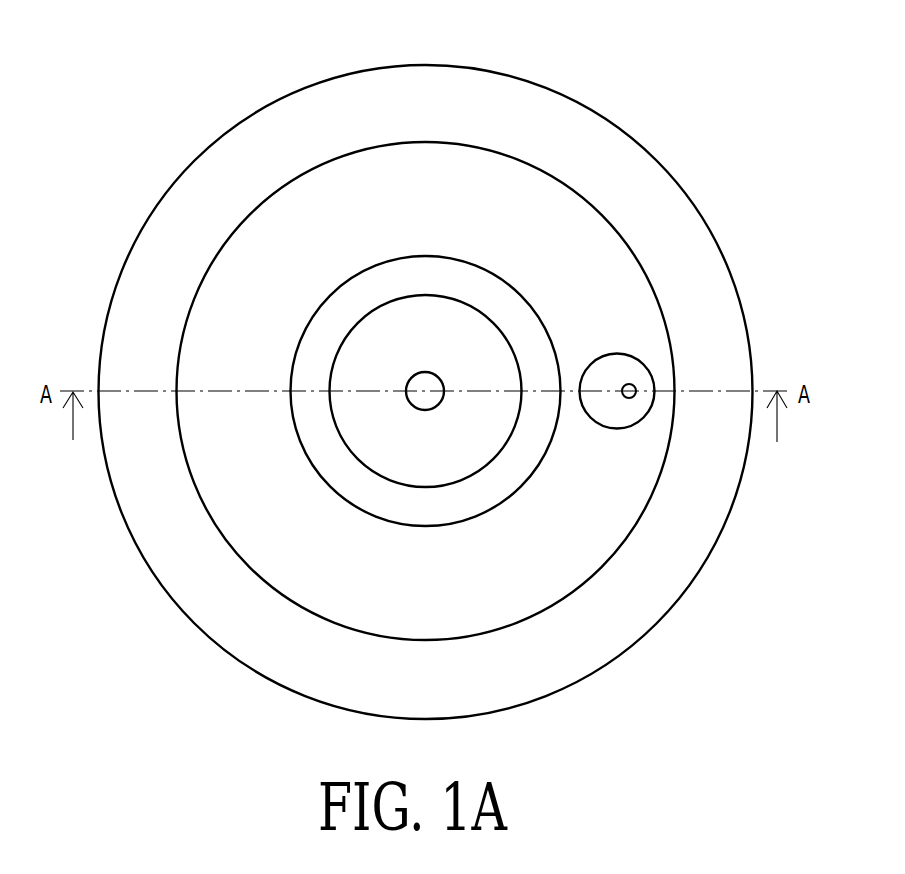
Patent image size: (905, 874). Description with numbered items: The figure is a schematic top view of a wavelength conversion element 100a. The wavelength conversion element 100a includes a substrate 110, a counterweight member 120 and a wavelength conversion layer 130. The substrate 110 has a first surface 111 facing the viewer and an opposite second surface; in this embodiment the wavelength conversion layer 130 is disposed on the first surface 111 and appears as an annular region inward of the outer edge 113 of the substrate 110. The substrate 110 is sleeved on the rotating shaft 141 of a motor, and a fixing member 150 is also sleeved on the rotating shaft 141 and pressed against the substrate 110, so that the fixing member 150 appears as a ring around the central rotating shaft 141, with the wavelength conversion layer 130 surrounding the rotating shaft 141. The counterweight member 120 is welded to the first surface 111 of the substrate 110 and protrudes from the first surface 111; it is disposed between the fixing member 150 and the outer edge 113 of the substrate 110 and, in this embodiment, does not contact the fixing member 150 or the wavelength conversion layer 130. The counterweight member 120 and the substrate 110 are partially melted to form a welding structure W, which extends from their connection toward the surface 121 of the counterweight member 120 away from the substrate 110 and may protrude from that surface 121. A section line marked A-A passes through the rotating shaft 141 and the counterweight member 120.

The wavelength conversion element 100a is at (91, 63).
The outer edge 113 is at (207, 127).
The wavelength conversion layer 130 is at (317, 102).
The substrate 110 is at (490, 187).
The first surface 111 is at (565, 200).
The fixing member 150 is at (438, 288).
The rotating shaft 141 is at (425, 399).
The counterweight member 120 is at (628, 372).
The welding structure W is at (632, 398).
The surface of the counterweight member 121 is at (610, 413).